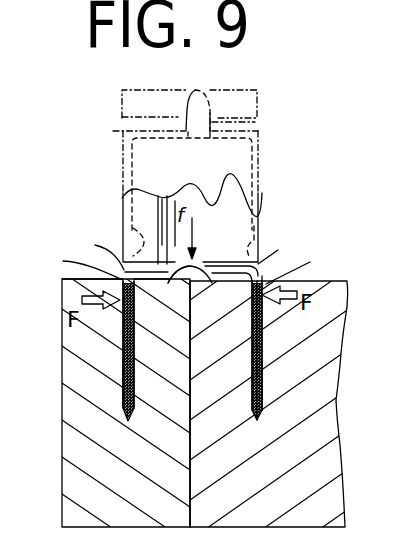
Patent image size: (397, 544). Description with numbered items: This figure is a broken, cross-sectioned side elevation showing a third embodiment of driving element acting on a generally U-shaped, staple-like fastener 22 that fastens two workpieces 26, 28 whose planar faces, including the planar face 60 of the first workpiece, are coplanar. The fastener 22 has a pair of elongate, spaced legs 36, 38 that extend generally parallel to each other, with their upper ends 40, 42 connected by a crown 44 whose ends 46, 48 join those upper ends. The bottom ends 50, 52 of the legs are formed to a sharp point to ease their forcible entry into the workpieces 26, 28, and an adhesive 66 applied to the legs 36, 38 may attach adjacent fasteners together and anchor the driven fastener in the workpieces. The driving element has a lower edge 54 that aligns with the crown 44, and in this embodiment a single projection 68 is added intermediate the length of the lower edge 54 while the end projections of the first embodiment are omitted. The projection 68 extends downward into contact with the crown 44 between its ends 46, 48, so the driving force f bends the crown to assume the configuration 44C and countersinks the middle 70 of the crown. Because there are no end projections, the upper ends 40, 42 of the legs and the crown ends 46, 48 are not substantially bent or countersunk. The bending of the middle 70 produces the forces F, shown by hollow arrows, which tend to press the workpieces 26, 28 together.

The fastener 22 is at (116, 180).
The workpiece 26 is at (127, 495).
The workpiece 28 is at (285, 495).
The leg 36 is at (51, 362).
The leg 38 is at (250, 160).
The upper end of leg 40 is at (122, 142).
The upper end of leg 42 is at (262, 143).
The crown 44 is at (213, 101).
The bent crown configuration 44C is at (203, 364).
The crown end 46 is at (123, 136).
The crown end 48 is at (253, 137).
The bottom end of fastener 50 is at (123, 226).
The bottom end of fastener 52 is at (258, 238).
The lower edge 54 is at (172, 200).
The planar face 60 is at (82, 283).
The adhesive 66 is at (128, 364).
The projection 68 is at (188, 88).
The middle of crown 70 is at (169, 288).